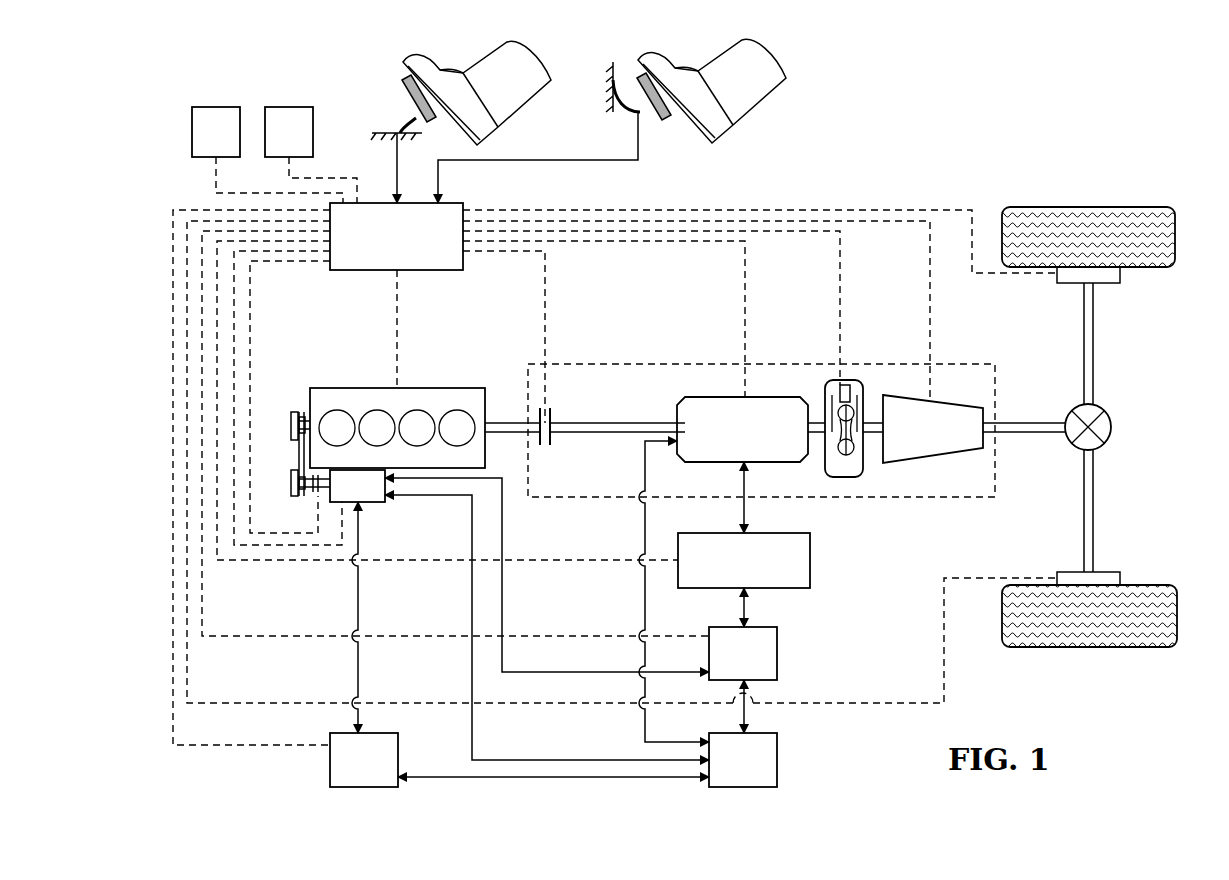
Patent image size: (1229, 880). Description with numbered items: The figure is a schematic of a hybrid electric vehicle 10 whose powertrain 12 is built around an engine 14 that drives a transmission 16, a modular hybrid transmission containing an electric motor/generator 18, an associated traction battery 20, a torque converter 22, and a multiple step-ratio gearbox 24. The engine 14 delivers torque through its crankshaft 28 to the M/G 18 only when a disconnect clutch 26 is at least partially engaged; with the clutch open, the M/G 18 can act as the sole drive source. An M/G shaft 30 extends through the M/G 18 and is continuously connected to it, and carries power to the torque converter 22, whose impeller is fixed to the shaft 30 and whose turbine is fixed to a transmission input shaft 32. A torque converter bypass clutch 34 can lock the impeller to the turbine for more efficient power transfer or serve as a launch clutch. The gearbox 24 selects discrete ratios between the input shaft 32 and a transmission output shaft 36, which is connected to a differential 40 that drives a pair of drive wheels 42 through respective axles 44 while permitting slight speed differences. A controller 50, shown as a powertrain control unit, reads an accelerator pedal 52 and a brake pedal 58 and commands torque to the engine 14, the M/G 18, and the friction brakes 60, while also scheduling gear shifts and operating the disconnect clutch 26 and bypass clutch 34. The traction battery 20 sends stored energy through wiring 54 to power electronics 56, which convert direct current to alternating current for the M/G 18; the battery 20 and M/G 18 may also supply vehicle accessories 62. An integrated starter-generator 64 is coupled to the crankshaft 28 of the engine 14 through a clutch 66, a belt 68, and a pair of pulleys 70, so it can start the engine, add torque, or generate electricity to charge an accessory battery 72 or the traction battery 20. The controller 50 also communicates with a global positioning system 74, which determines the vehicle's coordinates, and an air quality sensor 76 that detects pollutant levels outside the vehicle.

The hybrid electric vehicle 10 is at (845, 130).
The powertrain 12 is at (447, 596).
The engine 14 is at (357, 388).
The transmission 16 is at (803, 364).
The electric motor/generator 18 is at (715, 397).
The traction battery 20 is at (777, 652).
The torque converter 22 is at (845, 477).
The gearbox 24 is at (935, 463).
The disconnect clutch 26 is at (555, 415).
The crankshaft 28 is at (310, 414).
The M/G shaft 30 is at (633, 420).
The transmission input shaft 32 is at (870, 420).
The torque converter bypass clutch 34 is at (845, 385).
The transmission output shaft 36 is at (1013, 423).
The differential 40 is at (1112, 430).
The drive wheels 42 is at (1090, 207).
The axles 44 is at (1095, 338).
The controller 50 is at (378, 203).
The accelerator pedal 52 is at (410, 90).
The wiring 54 is at (740, 607).
The power electronics 56 is at (810, 560).
The brake pedal 58 is at (670, 127).
The friction brakes 60 is at (1122, 275).
The vehicle accessories 62 is at (777, 760).
The integrated starter-generator 64 is at (375, 502).
The clutch 66 is at (315, 497).
The belt 68 is at (292, 462).
The pulleys 70 is at (292, 428).
The accessory battery 72 is at (398, 758).
The global positioning system 74 is at (220, 107).
The air quality sensor 76 is at (294, 107).